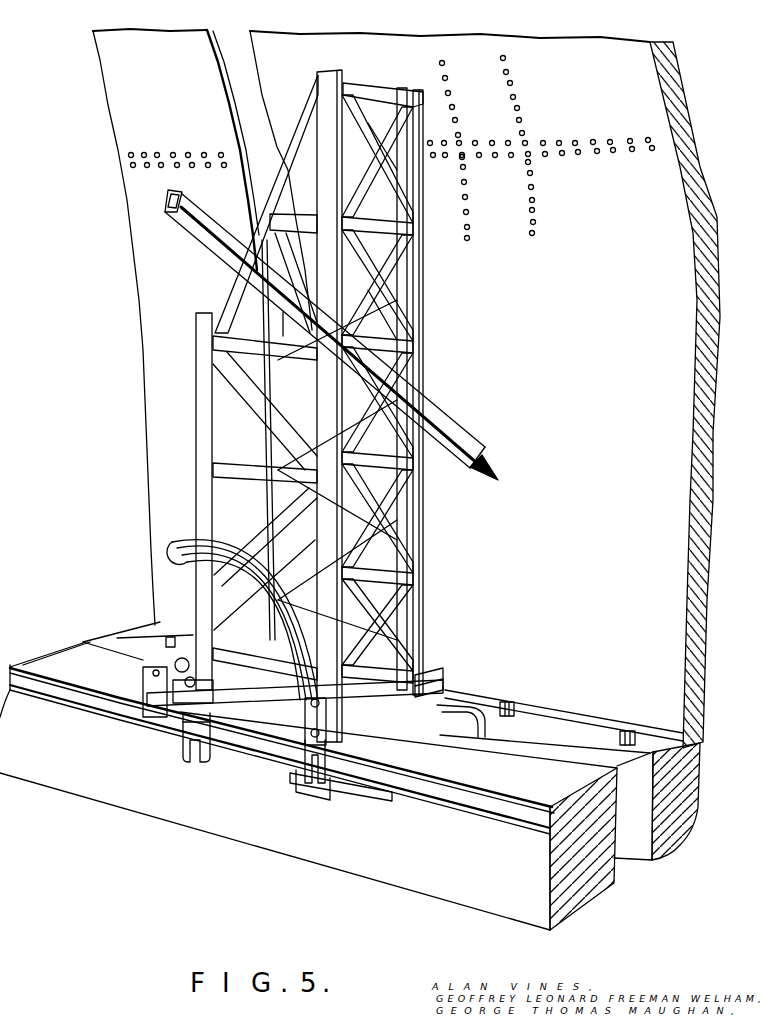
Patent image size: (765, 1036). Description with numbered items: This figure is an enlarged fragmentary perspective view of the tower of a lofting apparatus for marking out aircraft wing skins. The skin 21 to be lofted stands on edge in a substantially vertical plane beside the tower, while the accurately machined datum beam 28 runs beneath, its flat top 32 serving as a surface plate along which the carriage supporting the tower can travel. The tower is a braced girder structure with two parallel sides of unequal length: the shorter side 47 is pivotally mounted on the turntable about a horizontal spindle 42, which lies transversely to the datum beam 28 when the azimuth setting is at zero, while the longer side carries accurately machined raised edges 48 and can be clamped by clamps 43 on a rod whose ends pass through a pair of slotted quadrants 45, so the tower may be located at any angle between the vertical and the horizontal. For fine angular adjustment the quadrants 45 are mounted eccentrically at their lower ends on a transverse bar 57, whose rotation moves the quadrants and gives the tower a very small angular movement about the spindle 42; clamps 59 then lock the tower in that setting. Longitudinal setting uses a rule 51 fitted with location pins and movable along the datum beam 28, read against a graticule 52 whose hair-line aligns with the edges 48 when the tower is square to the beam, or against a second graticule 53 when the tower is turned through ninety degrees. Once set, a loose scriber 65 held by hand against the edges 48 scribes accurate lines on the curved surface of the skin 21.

The skin 21 is at (147, 230).
The datum beam 28 is at (390, 860).
The flat top 32 is at (505, 763).
The horizontal spindle 42 is at (147, 692).
The clamps 43 is at (325, 698).
The slotted quadrants 45 is at (168, 540).
The shorter side 47 is at (202, 378).
The raised edges 48 is at (337, 308).
The rule 51 is at (367, 795).
The graticule 52 is at (183, 747).
The second graticule 53 is at (300, 782).
The transverse bar 57 is at (305, 737).
The clamps 59 is at (420, 683).
The scriber 65 is at (432, 405).